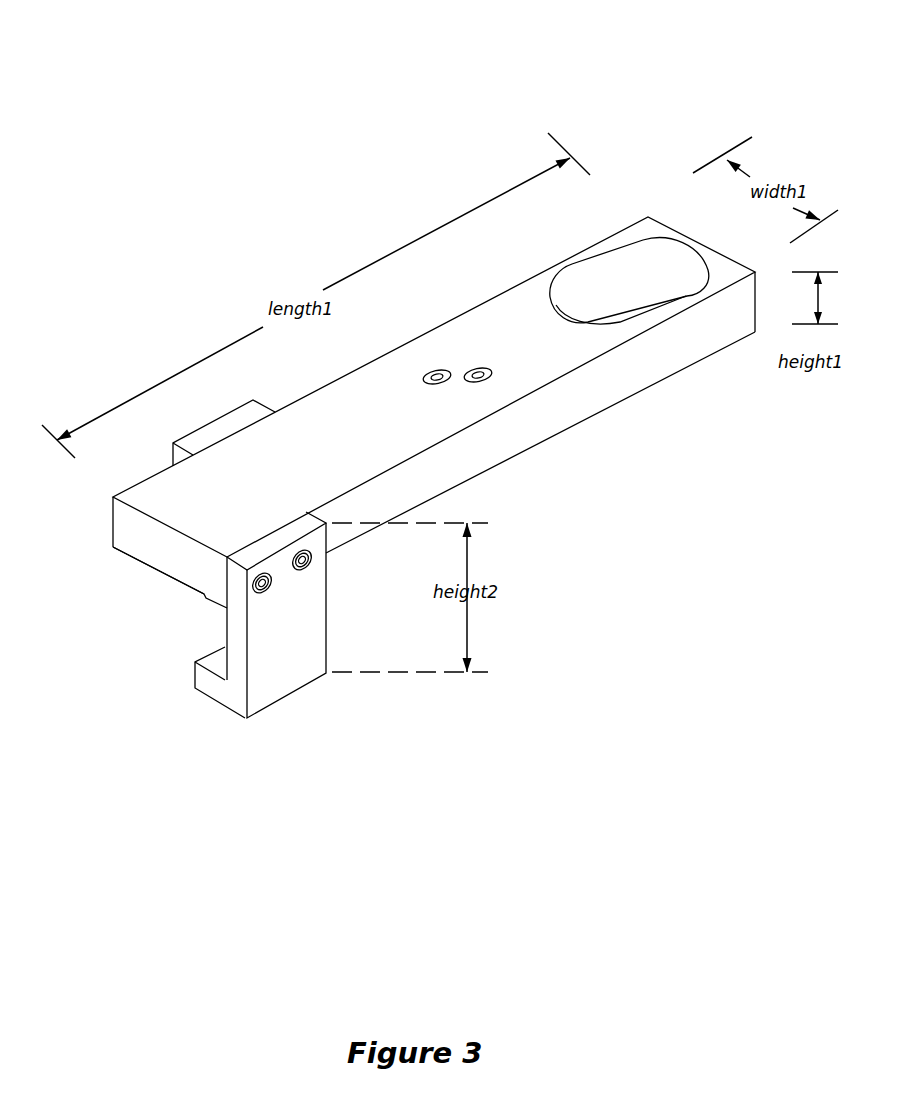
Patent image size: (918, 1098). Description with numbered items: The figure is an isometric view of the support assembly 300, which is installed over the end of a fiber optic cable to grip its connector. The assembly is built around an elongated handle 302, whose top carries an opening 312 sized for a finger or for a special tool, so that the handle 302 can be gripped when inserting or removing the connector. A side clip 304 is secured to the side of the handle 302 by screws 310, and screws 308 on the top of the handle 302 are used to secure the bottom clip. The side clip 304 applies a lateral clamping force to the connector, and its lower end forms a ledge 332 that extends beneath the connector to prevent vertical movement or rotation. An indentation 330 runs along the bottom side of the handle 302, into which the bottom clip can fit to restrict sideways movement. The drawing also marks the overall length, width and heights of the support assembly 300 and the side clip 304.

The support assembly 300 is at (102, 55).
The handle 302 is at (434, 412).
The side clip 304 is at (227, 422).
The screws 308 is at (447, 371).
The screws 310 is at (272, 589).
The opening 312 is at (675, 270).
The indentation 330 is at (157, 588).
The ledge 332 is at (188, 670).